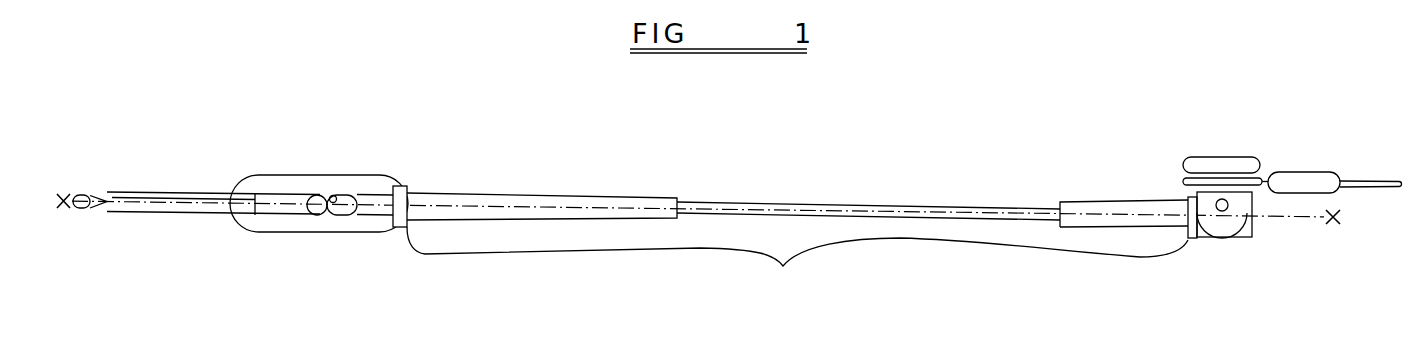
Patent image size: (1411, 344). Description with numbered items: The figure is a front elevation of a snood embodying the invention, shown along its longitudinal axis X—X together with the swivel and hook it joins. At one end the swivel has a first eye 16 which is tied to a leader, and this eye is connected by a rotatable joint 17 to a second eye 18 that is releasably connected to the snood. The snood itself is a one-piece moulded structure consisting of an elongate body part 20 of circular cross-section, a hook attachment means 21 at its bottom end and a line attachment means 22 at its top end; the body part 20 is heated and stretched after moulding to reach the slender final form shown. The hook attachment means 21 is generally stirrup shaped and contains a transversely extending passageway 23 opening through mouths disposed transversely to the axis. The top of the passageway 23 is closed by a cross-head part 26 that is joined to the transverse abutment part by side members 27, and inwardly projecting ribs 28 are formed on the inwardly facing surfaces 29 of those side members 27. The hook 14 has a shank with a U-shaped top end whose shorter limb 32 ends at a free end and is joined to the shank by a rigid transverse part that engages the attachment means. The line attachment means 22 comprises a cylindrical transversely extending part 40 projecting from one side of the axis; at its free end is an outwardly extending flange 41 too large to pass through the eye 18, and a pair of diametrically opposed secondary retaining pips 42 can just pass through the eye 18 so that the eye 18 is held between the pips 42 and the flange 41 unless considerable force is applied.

The hook 14 is at (175, 192).
The first eye 16 is at (1400, 181).
The rotatable joint 17 is at (1287, 172).
The second eye 18 is at (623, 200).
The body part 20 is at (797, 263).
The hook attachment means 21 is at (377, 182).
The line attachment means 22 is at (1198, 163).
The passageway 23 is at (334, 196).
The cross-head part 26 is at (398, 186).
The side members 27 is at (305, 193).
The ribs 28 is at (318, 195).
The inwardly facing surfaces 29 is at (348, 195).
The shorter limb 32 is at (268, 216).
The transversely extending part 40 is at (1243, 238).
The flange 41 is at (1255, 178).
The secondary retaining pips 42 is at (1219, 210).